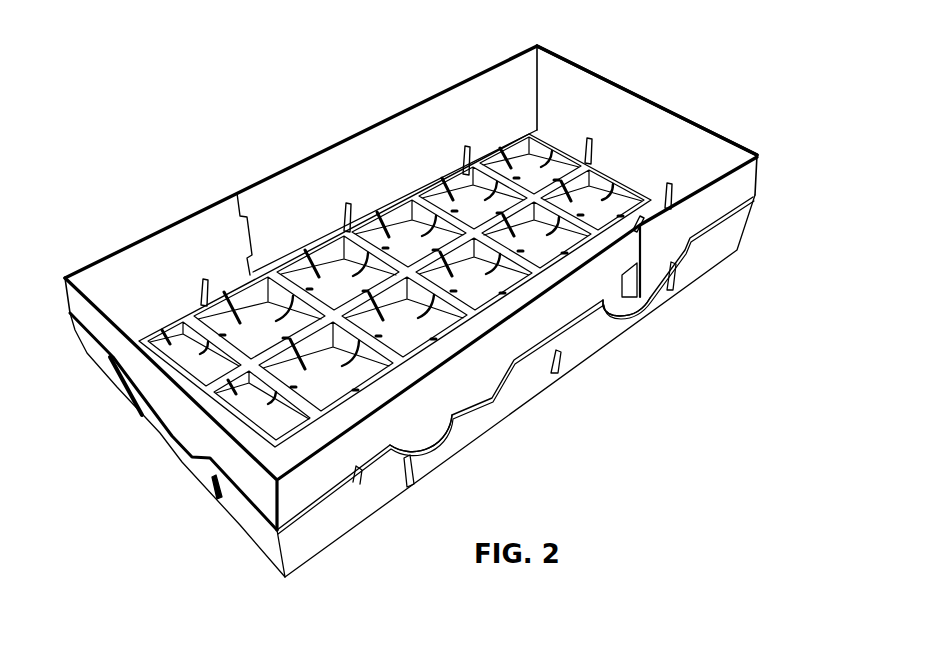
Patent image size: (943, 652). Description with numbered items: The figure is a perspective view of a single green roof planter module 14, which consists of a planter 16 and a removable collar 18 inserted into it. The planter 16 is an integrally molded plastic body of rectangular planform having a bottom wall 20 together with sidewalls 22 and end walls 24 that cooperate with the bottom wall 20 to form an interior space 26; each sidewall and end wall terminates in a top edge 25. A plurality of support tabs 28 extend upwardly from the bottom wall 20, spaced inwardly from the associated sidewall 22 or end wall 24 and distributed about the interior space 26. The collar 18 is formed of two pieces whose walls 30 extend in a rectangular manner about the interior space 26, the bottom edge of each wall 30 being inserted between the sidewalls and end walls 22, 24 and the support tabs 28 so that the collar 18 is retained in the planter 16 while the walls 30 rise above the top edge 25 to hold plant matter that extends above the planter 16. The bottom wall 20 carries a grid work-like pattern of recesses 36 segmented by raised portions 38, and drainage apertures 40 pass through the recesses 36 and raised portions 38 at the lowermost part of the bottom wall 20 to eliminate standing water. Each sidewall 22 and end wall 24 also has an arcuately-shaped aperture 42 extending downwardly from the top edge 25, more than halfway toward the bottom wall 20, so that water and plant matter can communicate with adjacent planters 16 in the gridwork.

The green roof planter module 14 is at (224, 133).
The planter 16 is at (613, 337).
The removable collar 18 is at (120, 237).
The bottom wall 20 is at (432, 183).
The sidewall 22 is at (518, 380).
The end wall 24 is at (246, 519).
The top edge 25 is at (361, 474).
The interior space 26 is at (563, 105).
The support tab 28 is at (216, 282).
The wall 30 is at (413, 418).
The recess 36 is at (337, 263).
The raised portion 38 is at (369, 230).
The drainage aperture 40 is at (400, 227).
The arcuately-shaped aperture 42 is at (493, 405).